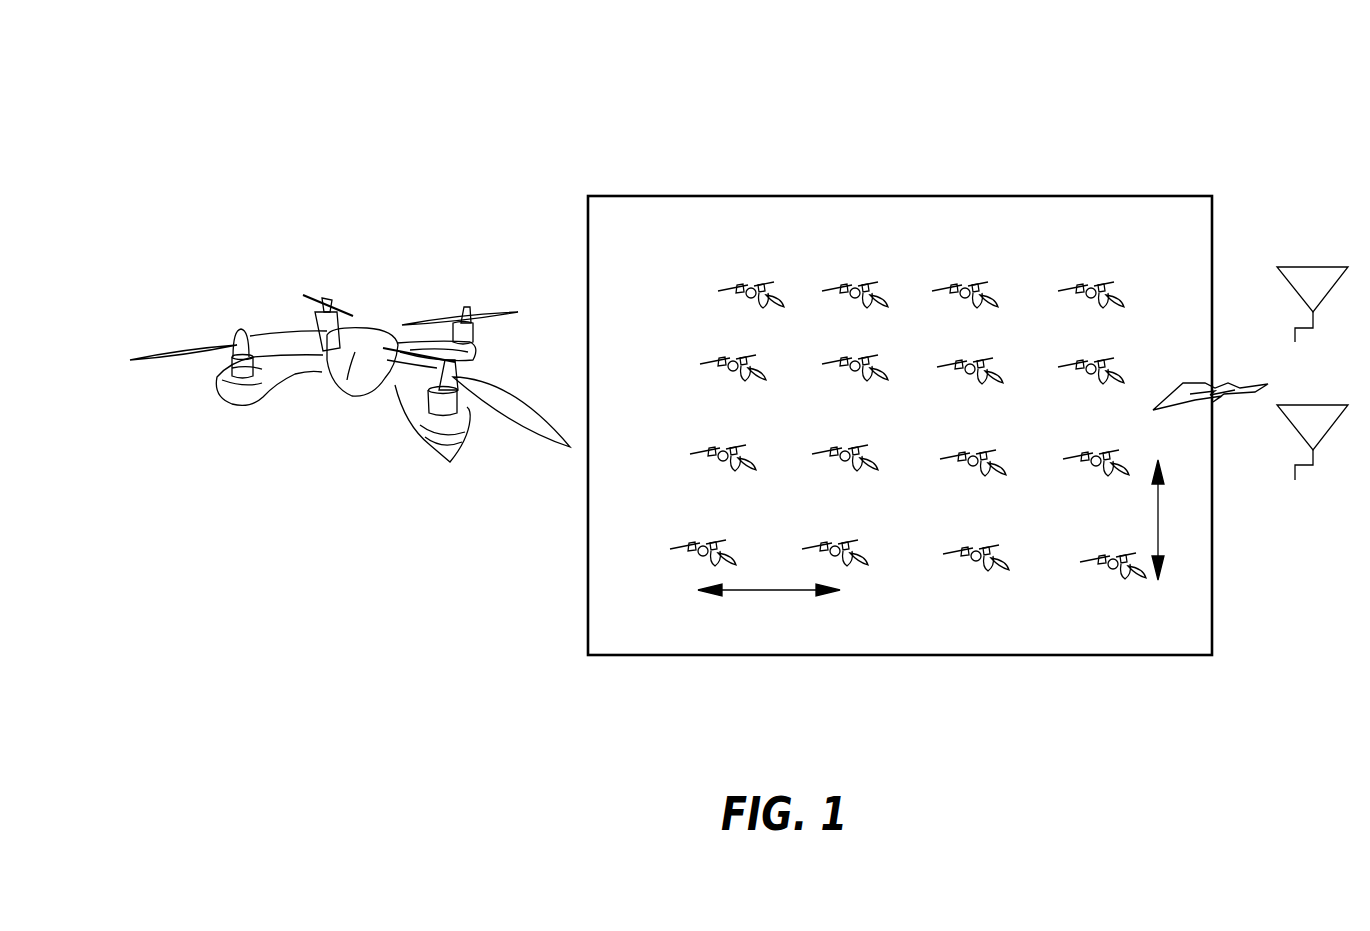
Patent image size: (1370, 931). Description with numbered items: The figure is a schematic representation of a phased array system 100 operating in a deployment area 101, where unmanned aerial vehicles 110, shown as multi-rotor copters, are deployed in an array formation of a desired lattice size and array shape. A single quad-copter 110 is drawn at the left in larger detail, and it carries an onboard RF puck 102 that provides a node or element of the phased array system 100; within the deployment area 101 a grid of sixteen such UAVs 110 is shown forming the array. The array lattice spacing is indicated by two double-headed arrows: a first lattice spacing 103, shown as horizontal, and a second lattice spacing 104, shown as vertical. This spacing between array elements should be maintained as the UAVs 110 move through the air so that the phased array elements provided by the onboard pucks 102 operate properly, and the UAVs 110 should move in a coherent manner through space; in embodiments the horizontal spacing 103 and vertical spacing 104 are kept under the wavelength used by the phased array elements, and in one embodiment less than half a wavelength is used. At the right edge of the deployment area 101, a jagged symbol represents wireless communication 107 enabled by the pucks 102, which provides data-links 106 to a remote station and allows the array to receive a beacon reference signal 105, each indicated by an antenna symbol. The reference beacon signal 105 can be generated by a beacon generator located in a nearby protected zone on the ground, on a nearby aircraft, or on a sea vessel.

The phased array system 100 is at (532, 137).
The deployment area 101 is at (920, 196).
The RF puck 102 is at (376, 322).
The first lattice spacing 103 is at (765, 591).
The second lattice spacing 104 is at (1158, 530).
The beacon reference signal 105 is at (1313, 318).
The data-link 106 is at (1312, 457).
The wireless communication 107 is at (1247, 383).
The unmanned aerial vehicle 110 is at (374, 486).